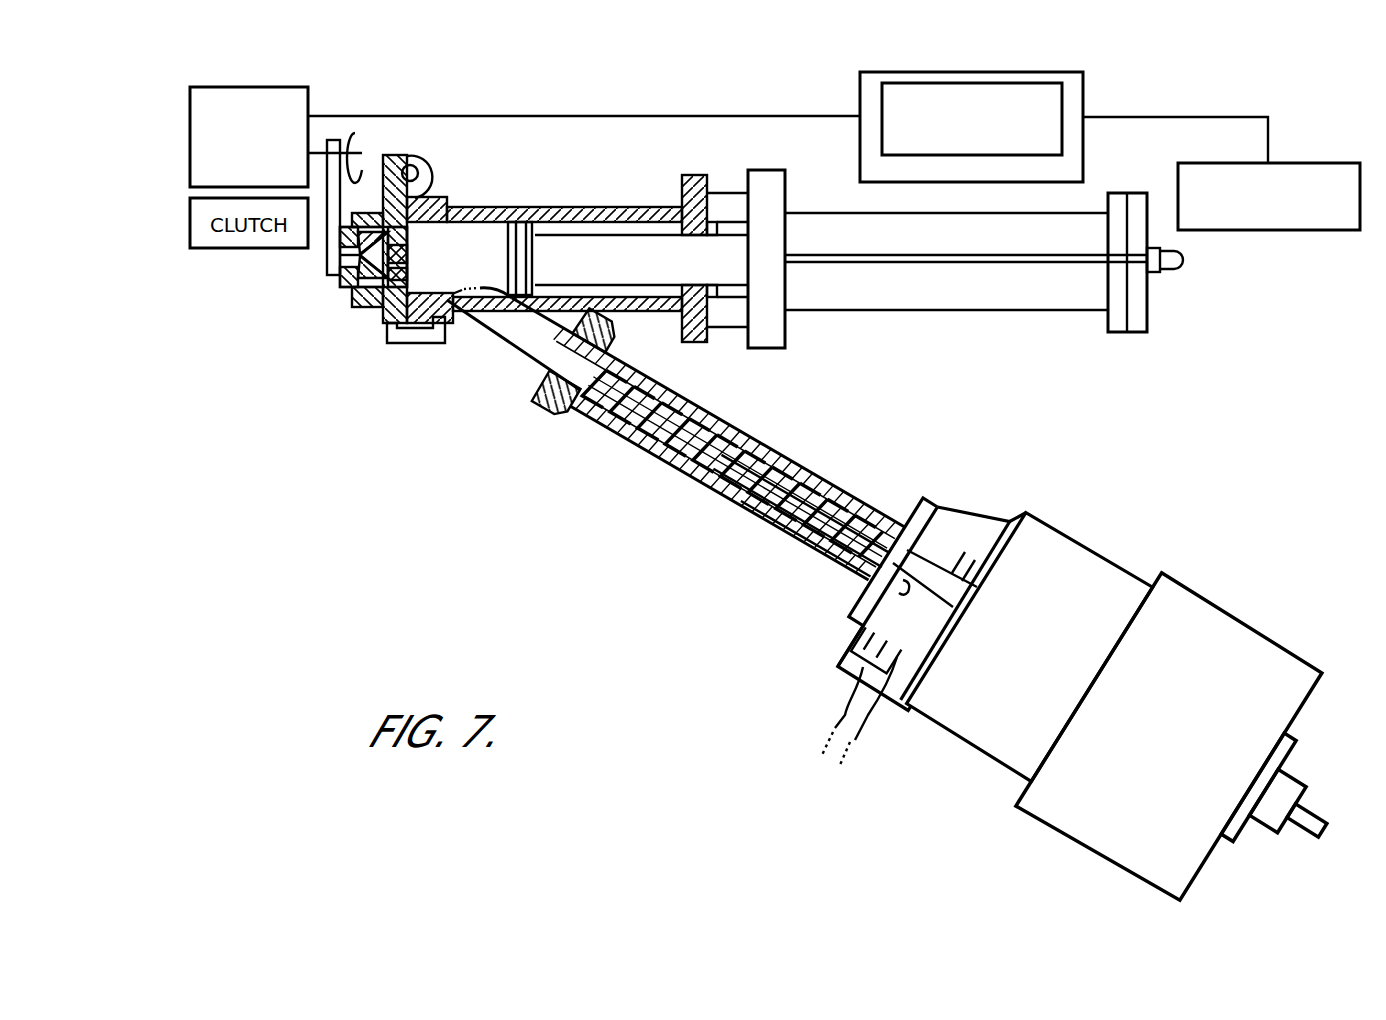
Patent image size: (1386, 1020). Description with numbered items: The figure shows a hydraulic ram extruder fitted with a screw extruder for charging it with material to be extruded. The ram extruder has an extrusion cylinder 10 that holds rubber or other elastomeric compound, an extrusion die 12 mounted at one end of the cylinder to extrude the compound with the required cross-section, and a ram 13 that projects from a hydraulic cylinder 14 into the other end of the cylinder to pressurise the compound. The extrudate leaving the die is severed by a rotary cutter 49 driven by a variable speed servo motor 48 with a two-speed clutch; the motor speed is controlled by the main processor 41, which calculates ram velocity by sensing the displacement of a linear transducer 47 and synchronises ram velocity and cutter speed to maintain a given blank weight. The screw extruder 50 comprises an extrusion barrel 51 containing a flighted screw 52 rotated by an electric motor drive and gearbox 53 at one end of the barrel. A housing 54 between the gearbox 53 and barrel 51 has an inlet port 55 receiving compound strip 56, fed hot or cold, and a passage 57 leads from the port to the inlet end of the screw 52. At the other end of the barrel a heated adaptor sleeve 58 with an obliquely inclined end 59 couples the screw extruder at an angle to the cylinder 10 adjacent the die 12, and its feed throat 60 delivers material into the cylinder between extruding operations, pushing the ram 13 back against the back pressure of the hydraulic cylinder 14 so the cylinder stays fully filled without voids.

The extrusion cylinder 10 is at (470, 205).
The extrusion die 12 is at (343, 270).
The ram 13 is at (526, 222).
The hydraulic cylinder 14 is at (818, 220).
The main processor 41 is at (1085, 85).
The linear transducer 47 is at (1243, 231).
The variable speed servo motor 48 is at (224, 87).
The cutter 49 is at (343, 200).
The screw extruder 50 is at (612, 556).
The extrusion barrel 51 is at (622, 425).
The flighted screw 52 is at (668, 460).
The electric motor drive and gearbox 53 is at (1202, 592).
The housing 54 is at (837, 660).
The inlet port 55 is at (873, 641).
The compound strip 56 is at (837, 727).
The passage 57 is at (898, 584).
The heated adaptor sleeve 58 is at (490, 337).
The obliquely inclined end 59 is at (460, 325).
The feed throat 60 is at (543, 352).